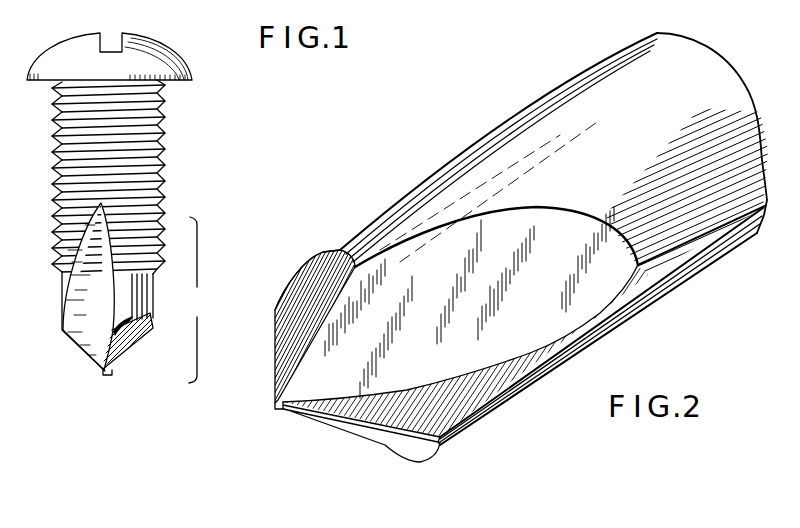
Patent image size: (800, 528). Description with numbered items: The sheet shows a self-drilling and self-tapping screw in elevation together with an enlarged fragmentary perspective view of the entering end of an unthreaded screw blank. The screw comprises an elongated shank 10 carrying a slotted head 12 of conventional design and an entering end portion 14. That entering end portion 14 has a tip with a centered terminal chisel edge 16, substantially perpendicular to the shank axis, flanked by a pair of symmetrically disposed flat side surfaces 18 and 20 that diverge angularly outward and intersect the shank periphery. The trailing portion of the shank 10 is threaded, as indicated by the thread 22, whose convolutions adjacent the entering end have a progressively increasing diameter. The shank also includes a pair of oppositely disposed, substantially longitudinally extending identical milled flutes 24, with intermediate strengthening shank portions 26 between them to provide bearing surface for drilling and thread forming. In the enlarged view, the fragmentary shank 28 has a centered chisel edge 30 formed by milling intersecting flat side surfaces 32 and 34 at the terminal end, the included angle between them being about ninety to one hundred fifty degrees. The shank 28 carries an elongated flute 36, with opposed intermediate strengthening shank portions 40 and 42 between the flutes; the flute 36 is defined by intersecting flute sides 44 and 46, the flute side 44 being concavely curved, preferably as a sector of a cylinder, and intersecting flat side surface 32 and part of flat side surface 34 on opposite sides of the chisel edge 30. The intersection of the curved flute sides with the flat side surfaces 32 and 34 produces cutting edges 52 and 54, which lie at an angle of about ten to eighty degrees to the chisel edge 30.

In FIG. 1, the elongated shank 10 is at (170, 175).
In FIG. 1, the head 12 is at (178, 64).
In FIG. 1, the entering end portion 14 is at (187, 300).
In FIG. 1, the terminal chisel edge 16 is at (106, 375).
In FIG. 1, the flat side surface 18 is at (138, 348).
In FIG. 1, the flat side surface 20 is at (85, 350).
In FIG. 1, the thread 22 is at (165, 129).
In FIG. 1, the milled flutes 24 is at (80, 290).
In FIG. 1, the intermediate strengthening shank portions 26 is at (142, 300).
In FIG. 2, the fragmentary shank 28 is at (478, 130).
In FIG. 2, the chisel edge 30 is at (282, 410).
In FIG. 2, the flat side surface 32 is at (392, 447).
In FIG. 2, the flat side surface 34 is at (285, 337).
In FIG. 2, the elongated flute 36 is at (499, 371).
In FIG. 2, the intermediate strengthening shank portion 40 is at (450, 445).
In FIG. 2, the intermediate strengthening shank portion 42 is at (363, 228).
In FIG. 2, the flute side 44 is at (548, 360).
In FIG. 2, the flute side 46 is at (482, 240).
In FIG. 2, the cutting edge 52 is at (392, 432).
In FIG. 2, the cutting edge 54 is at (275, 312).